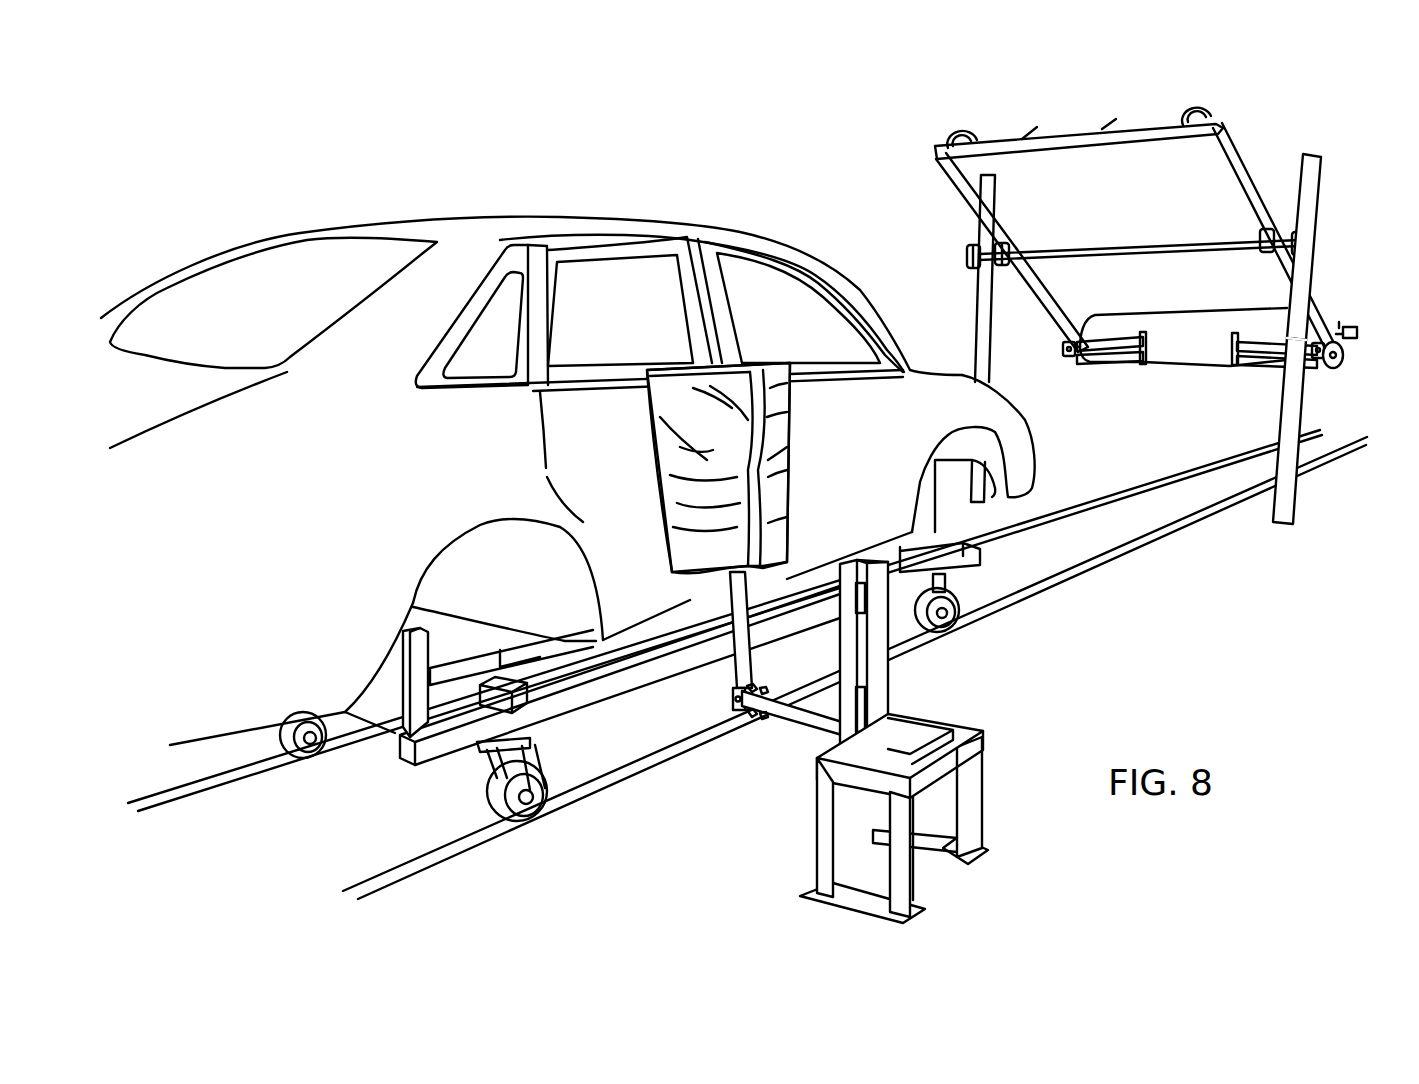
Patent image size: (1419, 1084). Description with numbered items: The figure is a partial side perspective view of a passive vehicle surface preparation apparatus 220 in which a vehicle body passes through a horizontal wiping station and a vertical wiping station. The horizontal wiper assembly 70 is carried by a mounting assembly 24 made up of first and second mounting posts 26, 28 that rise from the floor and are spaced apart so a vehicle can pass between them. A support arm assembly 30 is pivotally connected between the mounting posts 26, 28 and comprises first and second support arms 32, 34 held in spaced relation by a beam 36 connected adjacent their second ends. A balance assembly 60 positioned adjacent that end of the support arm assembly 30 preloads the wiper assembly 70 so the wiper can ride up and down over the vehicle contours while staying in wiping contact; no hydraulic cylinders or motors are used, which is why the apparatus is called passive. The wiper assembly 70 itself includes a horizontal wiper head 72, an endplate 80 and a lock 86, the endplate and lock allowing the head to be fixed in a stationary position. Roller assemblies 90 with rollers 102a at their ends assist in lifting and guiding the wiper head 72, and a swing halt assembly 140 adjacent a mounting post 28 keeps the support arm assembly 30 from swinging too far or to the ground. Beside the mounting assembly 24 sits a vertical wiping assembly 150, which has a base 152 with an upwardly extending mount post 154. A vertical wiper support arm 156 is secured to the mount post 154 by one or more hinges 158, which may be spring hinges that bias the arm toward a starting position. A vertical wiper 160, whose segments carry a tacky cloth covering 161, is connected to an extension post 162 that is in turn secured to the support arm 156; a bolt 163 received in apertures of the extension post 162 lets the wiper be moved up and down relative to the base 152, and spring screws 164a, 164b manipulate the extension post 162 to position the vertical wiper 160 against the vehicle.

The vehicle surface preparation apparatus 220 is at (724, 203).
The balance assembly 60 is at (930, 132).
The beam 36 is at (1060, 132).
The first mounting post 26 is at (1308, 154).
The first support arm 32 is at (1240, 157).
The second support arm 34 is at (940, 178).
The second mounting post 28 is at (995, 170).
The horizontal wiper head 72 is at (1172, 290).
The support arm assembly 30 is at (935, 252).
The swing halt assembly 140 is at (1015, 296).
The roller 102a is at (1106, 370).
The roller assembly 90 is at (1128, 385).
The lock 86 is at (1343, 326).
The endplate 80 is at (1344, 358).
The horizontal wiper assembly 70 is at (1352, 396).
The mounting assembly 24 is at (1290, 537).
The vertical wiper 160 is at (640, 463).
The tacky cloth covering 161 is at (790, 450).
The spring screw 164a is at (757, 687).
The extension post 162 is at (733, 680).
The bolt 163 is at (733, 702).
The spring screw 164b is at (753, 723).
The vertical wiper support arm 156 is at (797, 723).
The mount post 154 is at (890, 672).
The hinge 158 is at (868, 708).
The base 152 is at (817, 838).
The vertical wiping assembly 150 is at (1028, 815).